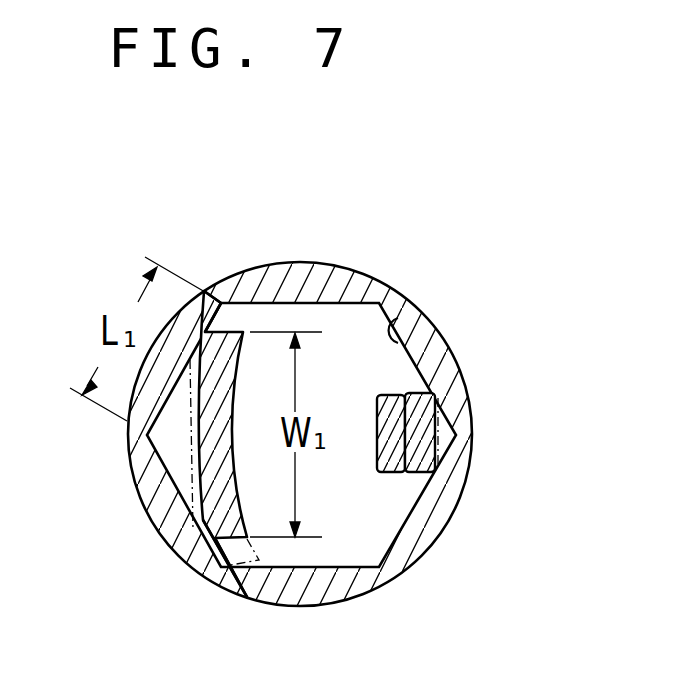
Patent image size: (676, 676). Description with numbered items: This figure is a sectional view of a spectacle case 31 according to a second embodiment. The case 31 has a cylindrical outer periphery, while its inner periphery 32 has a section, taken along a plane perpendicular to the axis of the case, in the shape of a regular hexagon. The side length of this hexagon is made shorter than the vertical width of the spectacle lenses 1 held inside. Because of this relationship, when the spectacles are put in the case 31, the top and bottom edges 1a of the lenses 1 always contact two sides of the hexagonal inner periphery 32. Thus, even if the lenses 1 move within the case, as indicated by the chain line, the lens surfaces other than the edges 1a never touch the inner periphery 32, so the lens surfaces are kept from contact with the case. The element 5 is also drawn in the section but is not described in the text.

The spectacle lenses 1 is at (213, 481).
The top and bottom edges of the lenses 1a is at (205, 292).
The spectacle case 31 is at (351, 283).
The inner periphery 32 is at (397, 333).
The locking members 5 is at (428, 430).